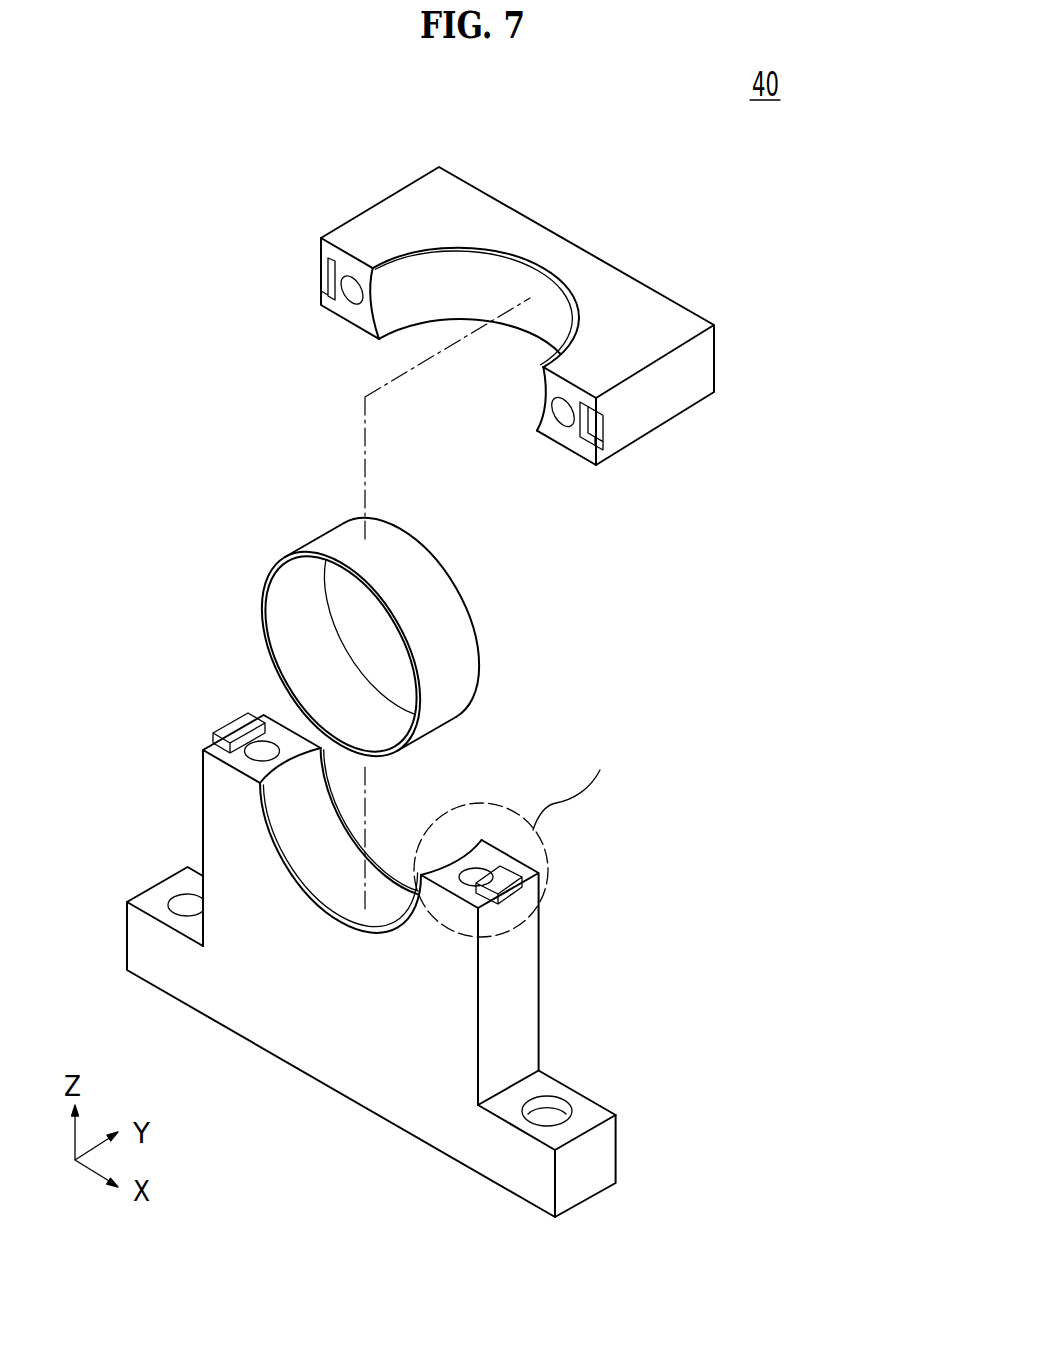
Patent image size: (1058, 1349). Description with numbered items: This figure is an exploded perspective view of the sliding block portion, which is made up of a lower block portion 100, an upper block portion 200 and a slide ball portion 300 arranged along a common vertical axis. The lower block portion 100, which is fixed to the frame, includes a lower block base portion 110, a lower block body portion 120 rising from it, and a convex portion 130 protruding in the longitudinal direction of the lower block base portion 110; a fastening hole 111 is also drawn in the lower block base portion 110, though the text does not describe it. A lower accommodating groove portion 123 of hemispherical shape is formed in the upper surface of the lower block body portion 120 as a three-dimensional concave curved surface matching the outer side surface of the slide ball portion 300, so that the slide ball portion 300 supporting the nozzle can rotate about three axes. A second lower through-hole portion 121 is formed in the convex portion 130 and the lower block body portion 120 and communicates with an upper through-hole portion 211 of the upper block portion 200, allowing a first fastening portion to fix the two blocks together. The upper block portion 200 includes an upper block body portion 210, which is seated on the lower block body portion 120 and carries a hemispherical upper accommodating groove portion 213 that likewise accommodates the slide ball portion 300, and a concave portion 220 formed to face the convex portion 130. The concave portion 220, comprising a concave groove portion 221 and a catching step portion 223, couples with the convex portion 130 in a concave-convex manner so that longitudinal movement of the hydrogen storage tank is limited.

The lower block portion 100 is at (746, 1066).
The lower block base portion 110 is at (616, 1146).
The fastening hole of base 111 is at (535, 1112).
The lower block body portion 120 is at (538, 997).
The second lower through-hole portion 121 is at (424, 895).
The lower accommodating groove portion 123 is at (320, 863).
The convex portion 130 is at (519, 874).
The upper block portion 200 is at (766, 351).
The upper block body portion 210 is at (641, 325).
The upper through-hole portion 211 is at (555, 419).
The upper accommodating groove portion 213 is at (507, 300).
The concave portion 220 is at (713, 476).
The concave groove portion 221 is at (598, 430).
The catching step portion 223 is at (597, 464).
The slide ball portion 300 is at (312, 545).